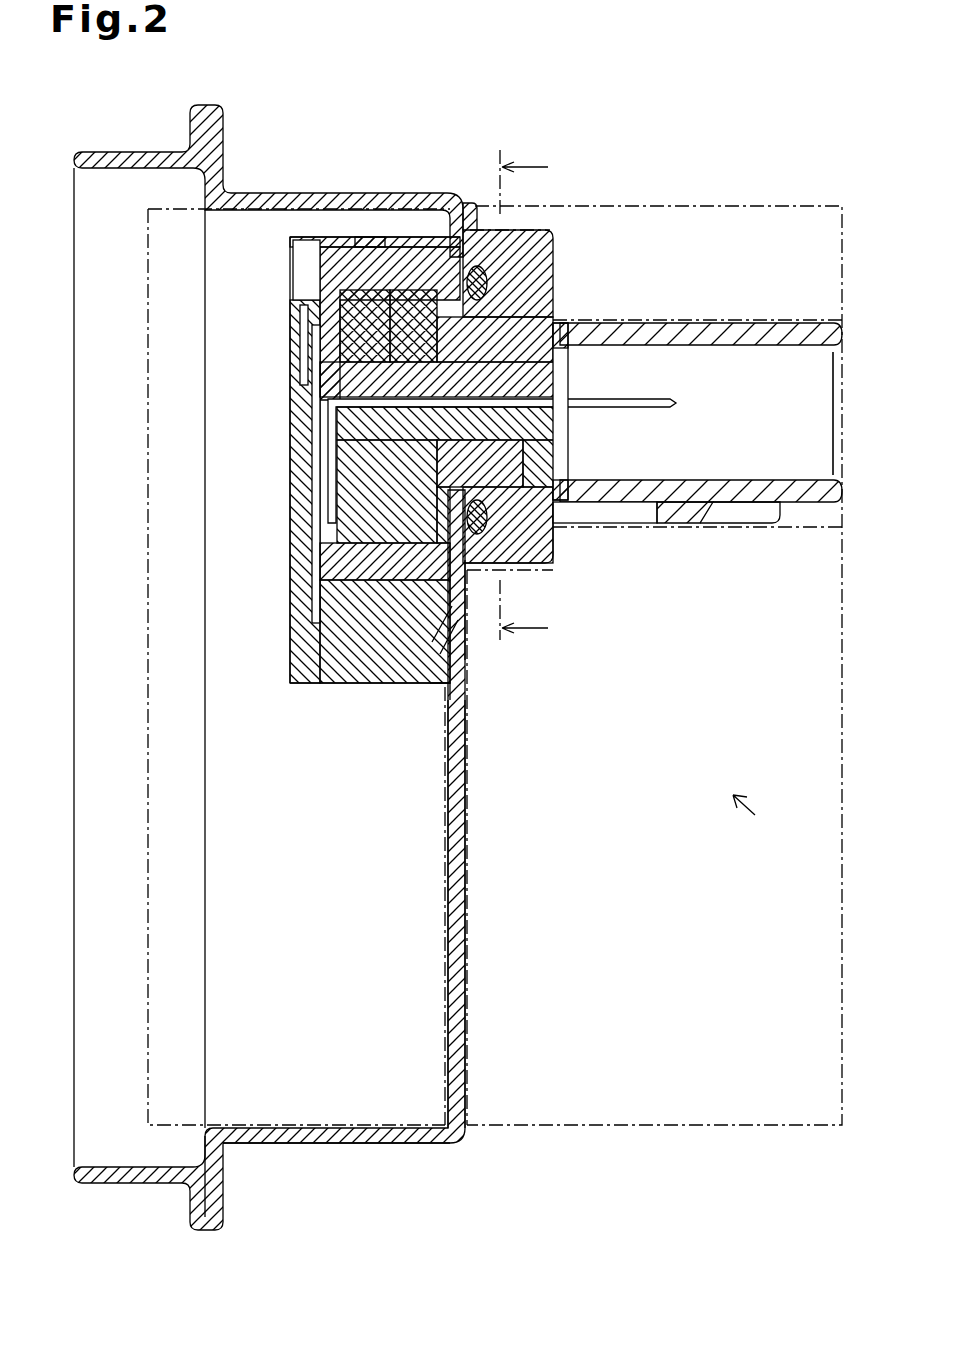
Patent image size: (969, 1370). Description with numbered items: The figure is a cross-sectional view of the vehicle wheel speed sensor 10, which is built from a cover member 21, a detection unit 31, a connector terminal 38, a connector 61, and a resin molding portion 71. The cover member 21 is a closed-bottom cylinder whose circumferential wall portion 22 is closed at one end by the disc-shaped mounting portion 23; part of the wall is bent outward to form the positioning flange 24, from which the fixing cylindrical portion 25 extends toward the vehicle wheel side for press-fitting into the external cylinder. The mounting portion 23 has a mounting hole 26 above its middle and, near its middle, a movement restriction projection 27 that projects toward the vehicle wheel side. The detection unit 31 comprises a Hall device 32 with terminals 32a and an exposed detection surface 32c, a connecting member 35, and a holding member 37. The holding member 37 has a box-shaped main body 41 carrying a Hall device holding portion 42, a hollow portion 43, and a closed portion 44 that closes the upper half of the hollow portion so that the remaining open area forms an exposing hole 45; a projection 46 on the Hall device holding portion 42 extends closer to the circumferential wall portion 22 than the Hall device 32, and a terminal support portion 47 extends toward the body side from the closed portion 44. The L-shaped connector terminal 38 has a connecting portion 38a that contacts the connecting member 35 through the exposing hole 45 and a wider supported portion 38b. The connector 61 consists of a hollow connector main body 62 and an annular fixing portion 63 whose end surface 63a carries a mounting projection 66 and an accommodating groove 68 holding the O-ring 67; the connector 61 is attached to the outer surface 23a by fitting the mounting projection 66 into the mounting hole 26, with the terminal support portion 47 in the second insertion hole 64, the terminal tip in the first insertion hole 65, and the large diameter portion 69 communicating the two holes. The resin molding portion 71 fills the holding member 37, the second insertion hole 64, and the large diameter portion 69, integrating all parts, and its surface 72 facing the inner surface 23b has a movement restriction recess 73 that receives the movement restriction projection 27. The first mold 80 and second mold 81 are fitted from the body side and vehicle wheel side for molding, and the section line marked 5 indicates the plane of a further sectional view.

The vehicle wheel speed sensor 10 is at (761, 810).
The cover member 21 is at (305, 669).
The circumferential wall portion 22 is at (375, 1145).
The mounting portion 23 is at (466, 912).
The outer surface 23a is at (466, 762).
The inner surface 23b is at (447, 800).
The positioning flange 24 is at (224, 1218).
The fixing cylindrical portion 25 is at (140, 1183).
The mounting hole 26 is at (488, 285).
The movement restriction projection 27 is at (442, 690).
The detection unit 31 is at (420, 240).
The Hall device 32 is at (292, 243).
The terminals 32a is at (300, 343).
The detection surface 32c is at (292, 280).
The connecting member 35 is at (312, 606).
The holding member 37 is at (345, 242).
The connector terminal 38 is at (660, 408).
The connecting portion 38a is at (338, 482).
The supported portion 38b is at (422, 430).
The main body 41 is at (340, 595).
The Hall device holding portion 42 is at (395, 300).
The hollow portion 43 is at (300, 570).
The closed portion 44 is at (345, 330).
The exposing hole 45 is at (322, 400).
The projection 46 is at (375, 240).
The terminal support portion 47 is at (490, 350).
The connector 61 is at (790, 525).
The connector main body 62 is at (735, 323).
The fixing portion 63 is at (553, 232).
The end surface 63a is at (474, 210).
The second insertion hole 64 is at (478, 440).
The first insertion hole 65 is at (775, 352).
The mounting projection 66 is at (450, 500).
The O-ring 67 is at (515, 568).
The accommodating groove 68 is at (488, 515).
The large diameter portion 69 is at (565, 335).
The resin molding portion 71 is at (312, 687).
The surface 72 is at (466, 605).
The movement restriction recess 73 is at (362, 635).
The first mold 80 is at (630, 1127).
The second mold 81 is at (148, 1068).
The section line V-V 5 is at (534, 396).